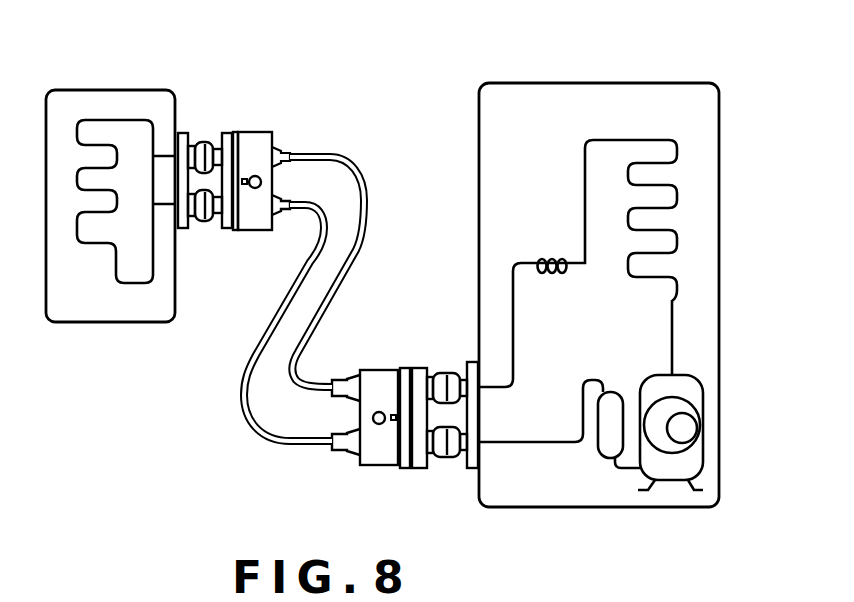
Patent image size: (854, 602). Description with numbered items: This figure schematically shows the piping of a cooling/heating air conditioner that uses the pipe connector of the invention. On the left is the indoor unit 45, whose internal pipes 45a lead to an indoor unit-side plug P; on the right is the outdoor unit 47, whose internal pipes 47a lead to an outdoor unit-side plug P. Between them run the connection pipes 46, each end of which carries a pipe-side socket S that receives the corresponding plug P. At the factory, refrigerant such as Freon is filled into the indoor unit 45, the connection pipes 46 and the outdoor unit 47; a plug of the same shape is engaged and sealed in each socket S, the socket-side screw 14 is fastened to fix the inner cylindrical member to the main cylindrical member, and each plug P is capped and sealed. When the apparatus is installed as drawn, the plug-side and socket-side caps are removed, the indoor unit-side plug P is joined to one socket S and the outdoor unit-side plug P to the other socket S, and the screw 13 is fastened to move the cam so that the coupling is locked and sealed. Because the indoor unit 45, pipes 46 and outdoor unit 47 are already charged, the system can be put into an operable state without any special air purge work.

The indoor unit 45 is at (124, 90).
The internal pipes 45a is at (156, 204).
The plug P is at (203, 143).
The socket S is at (279, 151).
The screw 13 is at (273, 175).
The socket-side screw 14 is at (250, 186).
The connection pipes 46 is at (362, 250).
The outdoor unit 47 is at (544, 83).
The internal pipes 47a is at (503, 389).